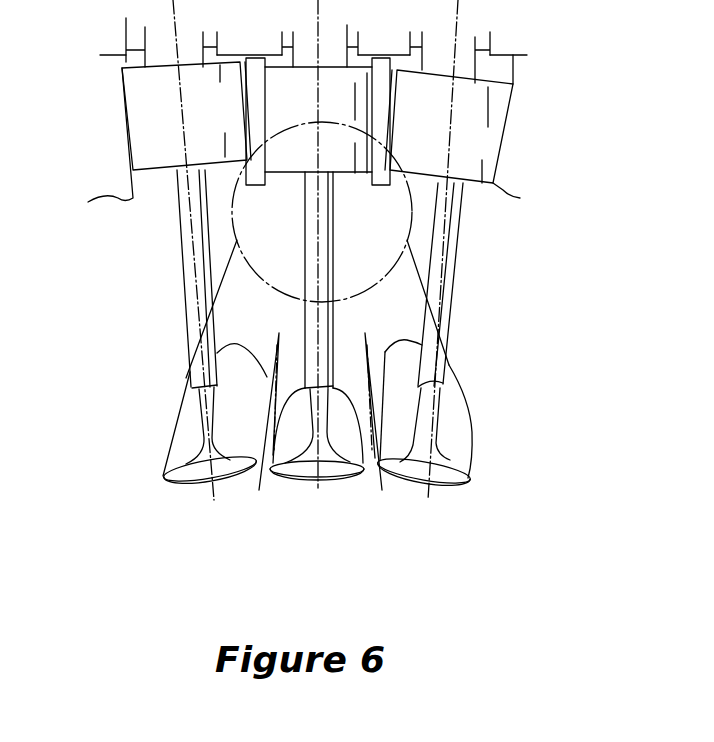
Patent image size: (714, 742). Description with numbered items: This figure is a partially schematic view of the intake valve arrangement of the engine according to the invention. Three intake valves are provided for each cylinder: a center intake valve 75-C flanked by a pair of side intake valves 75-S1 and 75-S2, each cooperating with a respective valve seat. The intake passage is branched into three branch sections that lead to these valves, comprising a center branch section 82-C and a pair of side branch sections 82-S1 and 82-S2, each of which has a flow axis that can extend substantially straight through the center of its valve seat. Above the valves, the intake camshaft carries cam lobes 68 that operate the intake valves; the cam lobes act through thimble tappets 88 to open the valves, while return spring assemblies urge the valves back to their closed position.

The thimble tappets 88 is at (145, 150).
The cam lobes 68 is at (158, 60).
The side intake valve 75-S1 is at (188, 483).
The center intake valve 75-C is at (337, 477).
The side intake valve 75-S2 is at (452, 483).
The side branch section 82-S1 is at (178, 430).
The center branch section 82-C is at (258, 472).
The side branch section 82-S2 is at (460, 423).